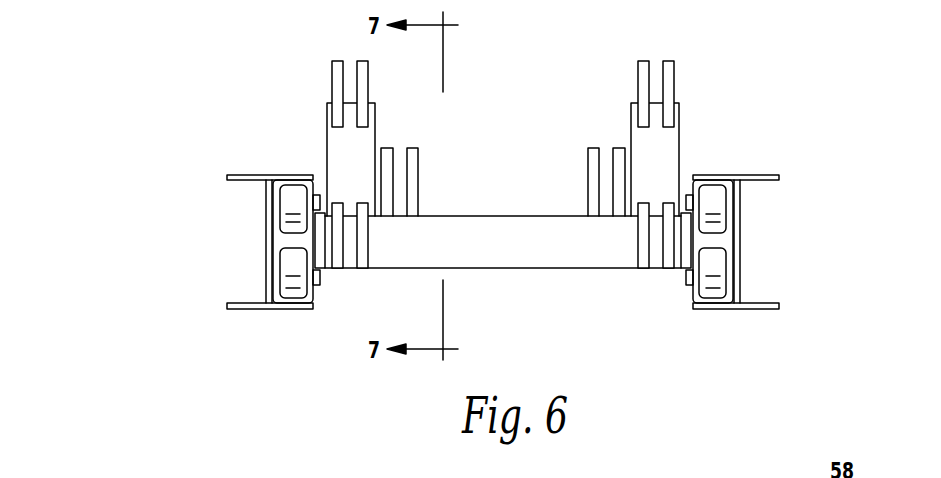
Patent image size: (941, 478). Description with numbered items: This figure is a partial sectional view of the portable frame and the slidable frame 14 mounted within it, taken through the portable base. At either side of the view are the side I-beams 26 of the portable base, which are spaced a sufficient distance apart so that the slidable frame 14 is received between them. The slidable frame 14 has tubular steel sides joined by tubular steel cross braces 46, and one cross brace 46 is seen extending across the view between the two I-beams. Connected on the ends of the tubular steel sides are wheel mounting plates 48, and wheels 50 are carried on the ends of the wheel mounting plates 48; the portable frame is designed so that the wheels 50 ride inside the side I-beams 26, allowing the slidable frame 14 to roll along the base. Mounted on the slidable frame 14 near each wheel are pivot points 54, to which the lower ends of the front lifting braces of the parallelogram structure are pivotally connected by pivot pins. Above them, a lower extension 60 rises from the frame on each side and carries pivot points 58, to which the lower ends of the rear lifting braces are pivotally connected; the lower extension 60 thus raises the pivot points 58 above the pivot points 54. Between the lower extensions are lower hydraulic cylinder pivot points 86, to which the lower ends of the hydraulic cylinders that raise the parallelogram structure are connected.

The slidable frame 14 is at (524, 290).
The side I-beams 26 is at (246, 173).
The tubular steel cross braces 46 is at (465, 220).
The wheel mounting plates 48 is at (687, 288).
The wheels 50 is at (288, 208).
The pivot points 54 is at (368, 243).
The pivot points 58 is at (332, 80).
The lower extension 60 is at (328, 158).
The lower hydraulic cylinder pivot points 86 is at (588, 168).